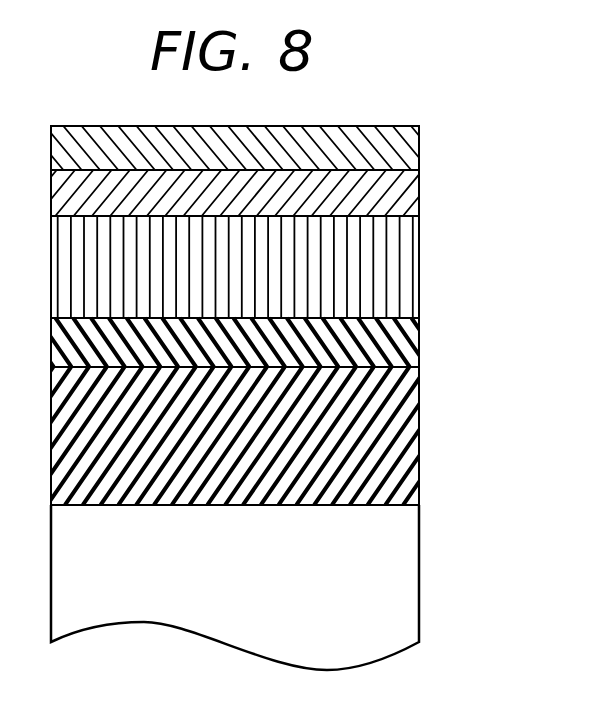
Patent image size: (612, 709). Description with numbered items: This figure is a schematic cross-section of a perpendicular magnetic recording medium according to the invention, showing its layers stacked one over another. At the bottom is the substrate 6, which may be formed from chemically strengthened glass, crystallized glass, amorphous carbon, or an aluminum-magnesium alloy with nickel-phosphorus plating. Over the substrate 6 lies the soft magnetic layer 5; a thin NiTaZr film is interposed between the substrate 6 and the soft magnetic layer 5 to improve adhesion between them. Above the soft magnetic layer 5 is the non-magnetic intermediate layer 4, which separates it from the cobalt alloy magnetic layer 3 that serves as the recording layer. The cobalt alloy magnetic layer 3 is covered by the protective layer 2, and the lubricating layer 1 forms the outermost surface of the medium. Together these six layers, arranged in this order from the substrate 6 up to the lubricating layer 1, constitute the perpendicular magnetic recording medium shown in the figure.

The lubricating layer 1 is at (410, 147).
The protective layer 2 is at (410, 186).
The cobalt alloy magnetic layer 3 is at (408, 267).
The non-magnetic intermediate layer 4 is at (420, 337).
The soft magnetic layer 5 is at (420, 441).
The substrate 6 is at (412, 576).